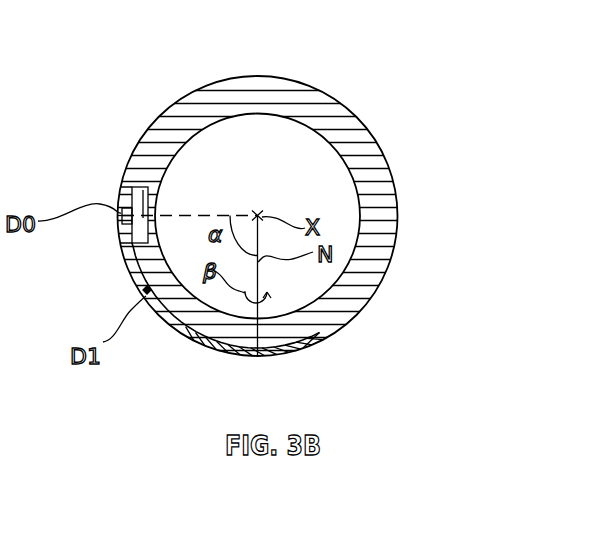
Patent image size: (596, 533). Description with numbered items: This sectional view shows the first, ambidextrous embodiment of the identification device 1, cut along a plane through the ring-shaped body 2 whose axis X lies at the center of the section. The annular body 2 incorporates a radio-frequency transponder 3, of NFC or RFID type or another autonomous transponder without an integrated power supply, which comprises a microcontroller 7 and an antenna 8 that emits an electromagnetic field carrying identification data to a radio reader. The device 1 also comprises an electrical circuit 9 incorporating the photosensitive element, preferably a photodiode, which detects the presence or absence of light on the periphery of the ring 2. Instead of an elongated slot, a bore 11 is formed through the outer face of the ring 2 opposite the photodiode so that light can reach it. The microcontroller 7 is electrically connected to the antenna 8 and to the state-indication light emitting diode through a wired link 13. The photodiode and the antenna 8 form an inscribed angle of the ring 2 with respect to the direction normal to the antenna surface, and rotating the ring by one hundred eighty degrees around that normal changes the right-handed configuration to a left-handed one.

The identification device 1 is at (344, 50).
The ring-shaped body 2 is at (353, 132).
The radio-frequency transponder 3 is at (113, 236).
The microcontroller 7 is at (143, 205).
The antenna 8 is at (303, 348).
The electrical circuit 9 is at (115, 173).
The bore 11 is at (125, 207).
The wired link 13 is at (138, 296).